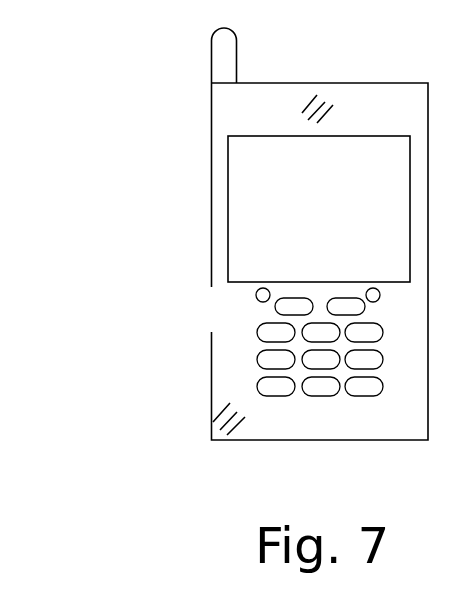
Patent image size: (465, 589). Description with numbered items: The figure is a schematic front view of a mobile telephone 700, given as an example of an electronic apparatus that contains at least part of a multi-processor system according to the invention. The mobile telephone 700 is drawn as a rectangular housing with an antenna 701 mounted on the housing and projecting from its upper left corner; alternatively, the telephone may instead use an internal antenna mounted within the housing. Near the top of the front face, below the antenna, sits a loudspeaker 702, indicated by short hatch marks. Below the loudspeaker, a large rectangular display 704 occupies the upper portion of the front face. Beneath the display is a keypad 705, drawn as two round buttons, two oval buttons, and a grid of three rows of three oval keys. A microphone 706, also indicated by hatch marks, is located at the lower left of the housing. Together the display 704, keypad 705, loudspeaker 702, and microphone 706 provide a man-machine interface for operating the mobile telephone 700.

The mobile telephone 700 is at (107, 112).
The antenna 701 is at (211, 73).
The loudspeaker 702 is at (317, 93).
The display 704 is at (228, 182).
The keypad 705 is at (257, 360).
The microphone 706 is at (211, 422).